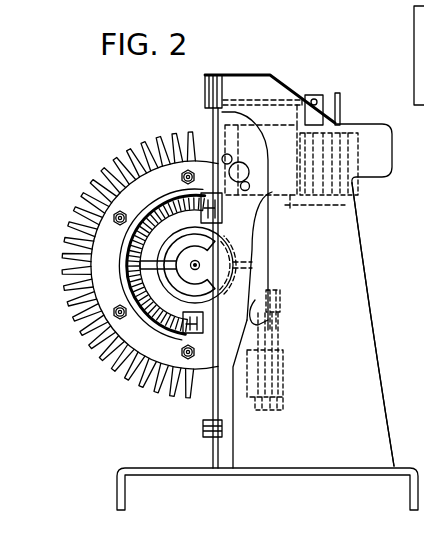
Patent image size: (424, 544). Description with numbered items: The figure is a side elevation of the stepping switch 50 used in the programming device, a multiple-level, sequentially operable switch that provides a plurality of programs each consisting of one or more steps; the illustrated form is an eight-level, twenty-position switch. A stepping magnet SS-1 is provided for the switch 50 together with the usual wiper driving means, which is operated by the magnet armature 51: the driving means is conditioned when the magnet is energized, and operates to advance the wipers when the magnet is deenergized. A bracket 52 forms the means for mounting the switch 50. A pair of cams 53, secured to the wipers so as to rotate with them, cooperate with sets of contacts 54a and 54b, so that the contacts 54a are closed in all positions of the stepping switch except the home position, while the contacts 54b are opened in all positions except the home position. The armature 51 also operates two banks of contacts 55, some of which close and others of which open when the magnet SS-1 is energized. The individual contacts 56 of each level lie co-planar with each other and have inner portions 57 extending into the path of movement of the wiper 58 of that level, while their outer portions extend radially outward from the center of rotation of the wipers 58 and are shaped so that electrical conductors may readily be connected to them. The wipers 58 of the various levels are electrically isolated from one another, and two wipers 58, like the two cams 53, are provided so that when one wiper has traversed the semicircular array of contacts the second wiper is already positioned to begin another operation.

The switch 50 is at (367, 280).
The magnet armature 51 is at (234, 110).
The bracket 52 is at (378, 340).
The cams 53 is at (140, 269).
The contacts 54a is at (262, 312).
The contacts 54b is at (275, 297).
The banks of contacts 55 is at (332, 217).
The contacts 56 is at (139, 146).
The inner portions 57 is at (184, 196).
The wiper 58 is at (207, 223).
The stepping magnet SS-1 is at (284, 140).